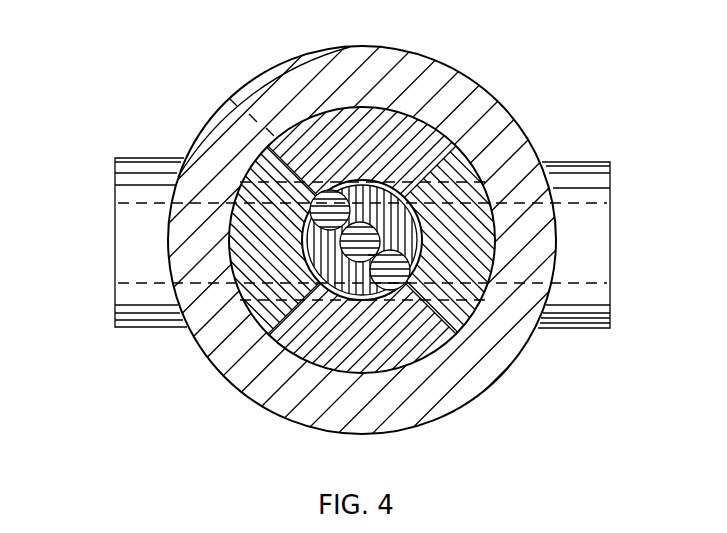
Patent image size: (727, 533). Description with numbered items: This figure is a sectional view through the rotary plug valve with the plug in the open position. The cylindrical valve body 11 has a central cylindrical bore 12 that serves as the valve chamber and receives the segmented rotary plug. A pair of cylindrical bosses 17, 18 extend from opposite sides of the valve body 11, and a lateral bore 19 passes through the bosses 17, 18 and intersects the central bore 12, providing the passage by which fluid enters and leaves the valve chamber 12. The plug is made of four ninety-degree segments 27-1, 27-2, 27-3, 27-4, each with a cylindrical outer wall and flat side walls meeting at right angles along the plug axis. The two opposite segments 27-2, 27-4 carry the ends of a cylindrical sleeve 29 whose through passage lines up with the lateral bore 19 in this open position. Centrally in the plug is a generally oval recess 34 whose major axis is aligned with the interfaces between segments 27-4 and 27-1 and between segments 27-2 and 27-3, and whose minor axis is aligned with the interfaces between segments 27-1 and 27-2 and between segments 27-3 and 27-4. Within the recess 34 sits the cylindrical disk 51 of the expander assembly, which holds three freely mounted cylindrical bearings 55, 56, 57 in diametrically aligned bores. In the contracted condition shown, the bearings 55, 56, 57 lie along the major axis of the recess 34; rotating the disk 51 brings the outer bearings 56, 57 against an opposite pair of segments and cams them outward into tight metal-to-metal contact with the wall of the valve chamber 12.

The valve body 11 is at (495, 130).
The central cylindrical bore 12 is at (347, 372).
The cylindrical boss 17 is at (235, 203).
The cylindrical boss 18 is at (592, 162).
The lateral bore 19 is at (595, 253).
The plug valve segment 27-1 is at (317, 128).
The plug valve segment 27-2 is at (453, 180).
The plug valve segment 27-3 is at (415, 345).
The plug valve segment 27-4 is at (258, 327).
The cylindrical sleeve 29 is at (228, 97).
The inner recess 34 is at (373, 296).
The cylindrical disk 51 is at (336, 252).
The cylindrical bearing 55 is at (405, 200).
The cylindrical bearing 56 is at (395, 272).
The cylindrical bearing 57 is at (318, 203).